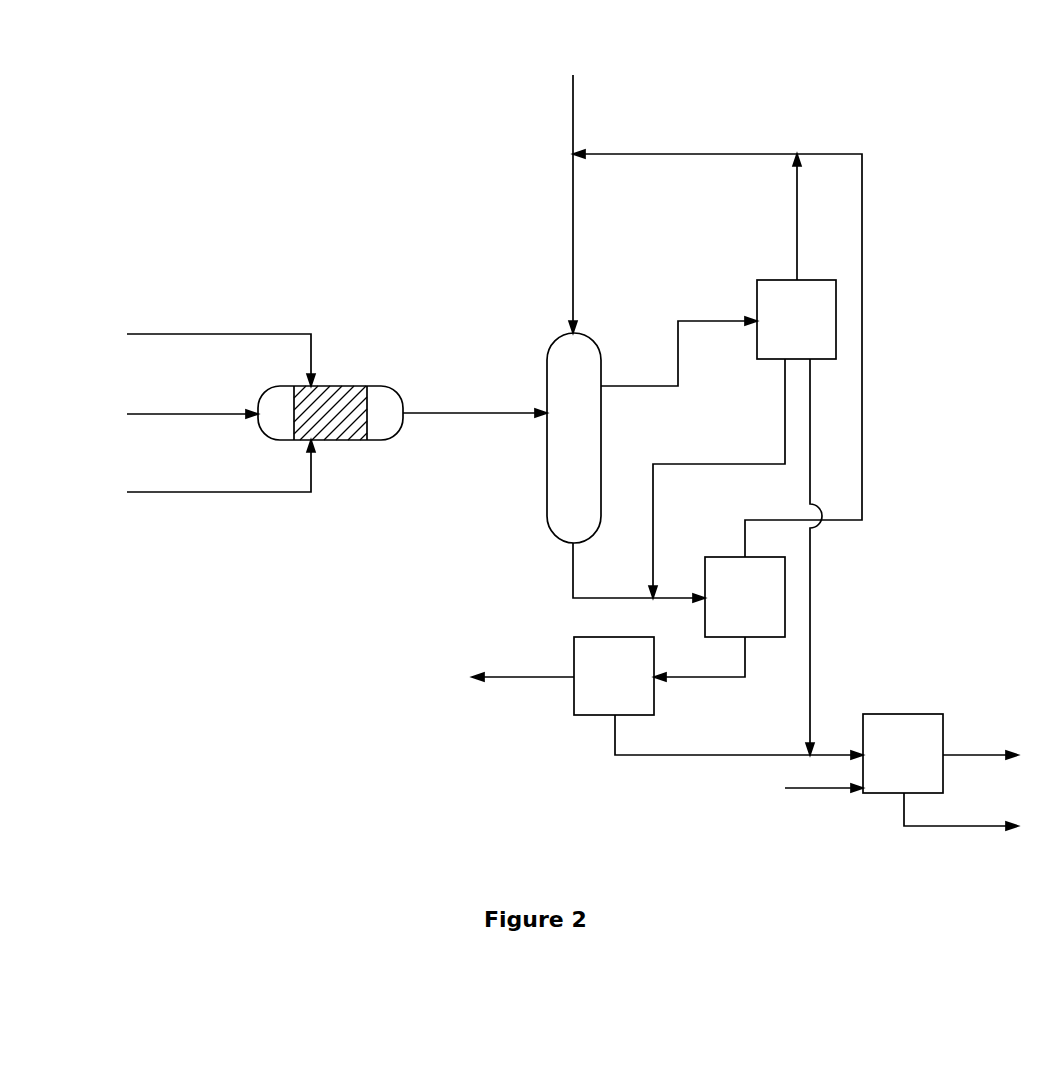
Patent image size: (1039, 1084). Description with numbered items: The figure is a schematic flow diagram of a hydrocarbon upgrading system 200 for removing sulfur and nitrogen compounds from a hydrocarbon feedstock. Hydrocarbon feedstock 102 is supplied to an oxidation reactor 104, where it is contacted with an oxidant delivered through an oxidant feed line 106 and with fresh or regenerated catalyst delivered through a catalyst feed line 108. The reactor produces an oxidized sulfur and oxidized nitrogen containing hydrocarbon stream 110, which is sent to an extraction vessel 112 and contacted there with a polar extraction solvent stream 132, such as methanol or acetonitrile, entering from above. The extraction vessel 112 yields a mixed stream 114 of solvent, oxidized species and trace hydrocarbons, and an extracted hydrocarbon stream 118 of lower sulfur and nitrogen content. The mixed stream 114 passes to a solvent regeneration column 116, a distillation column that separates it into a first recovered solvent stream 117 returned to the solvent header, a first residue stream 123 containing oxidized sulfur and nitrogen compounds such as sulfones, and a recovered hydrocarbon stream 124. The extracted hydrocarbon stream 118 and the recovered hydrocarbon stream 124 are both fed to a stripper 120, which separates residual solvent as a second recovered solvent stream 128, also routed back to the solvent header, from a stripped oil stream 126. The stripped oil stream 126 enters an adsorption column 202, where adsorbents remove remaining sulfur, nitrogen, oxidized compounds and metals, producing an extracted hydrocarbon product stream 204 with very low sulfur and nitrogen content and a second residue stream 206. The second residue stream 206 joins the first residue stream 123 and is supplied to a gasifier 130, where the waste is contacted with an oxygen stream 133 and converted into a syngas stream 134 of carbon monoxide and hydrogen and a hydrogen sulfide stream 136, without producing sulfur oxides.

The hydrocarbon upgrading system 200 is at (156, 140).
The hydrocarbon feedstock 102 is at (152, 414).
The oxidation reactor 104 is at (348, 386).
The oxidant feed line 106 is at (152, 334).
The catalyst feed line 108 is at (152, 492).
The oxidized sulfur and oxidized nitrogen containing hydrocarbon stream 110 is at (440, 413).
The extraction vessel 112 is at (550, 340).
The mixed stream 114 is at (613, 386).
The solvent regeneration column 116 is at (778, 280).
The first recovered solvent stream 117 is at (797, 220).
The extracted hydrocarbon stream 118 is at (573, 563).
The stripper 120 is at (732, 557).
The first residue stream 123 is at (810, 644).
The recovered hydrocarbon stream 124 is at (678, 464).
The stripped oil stream 126 is at (693, 679).
The second recovered solvent stream 128 is at (862, 258).
The gasifier 130 is at (890, 714).
The extraction solvent stream 132 is at (573, 235).
The oxygen stream 133 is at (840, 788).
The syngas stream 134 is at (960, 755).
The hydrogen sulfide stream 136 is at (960, 826).
The adsorption column 202 is at (574, 697).
The extracted hydrocarbon product stream 204 is at (540, 677).
The second residue stream 206 is at (654, 757).